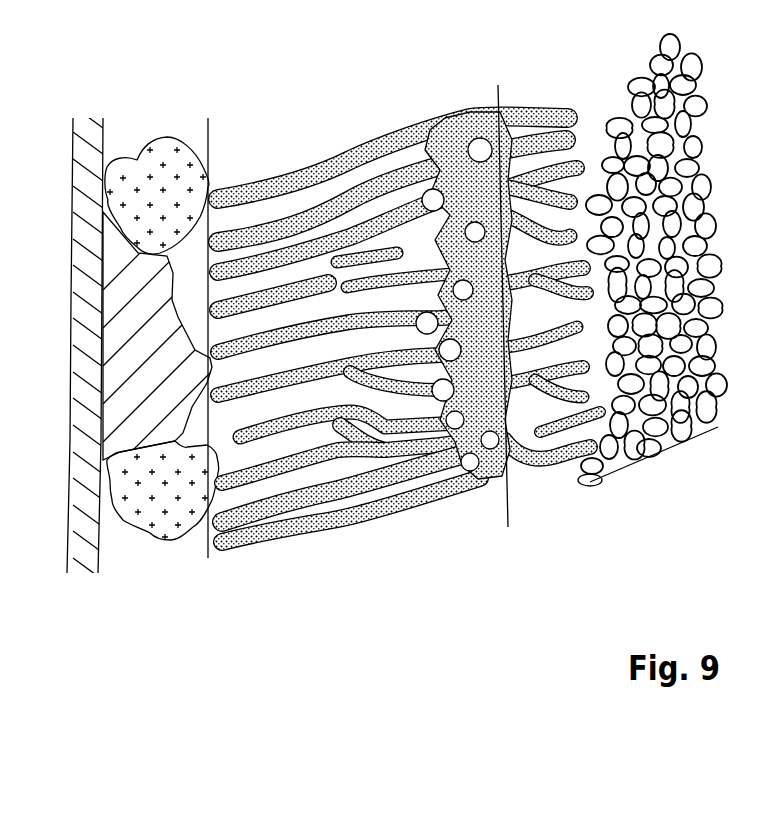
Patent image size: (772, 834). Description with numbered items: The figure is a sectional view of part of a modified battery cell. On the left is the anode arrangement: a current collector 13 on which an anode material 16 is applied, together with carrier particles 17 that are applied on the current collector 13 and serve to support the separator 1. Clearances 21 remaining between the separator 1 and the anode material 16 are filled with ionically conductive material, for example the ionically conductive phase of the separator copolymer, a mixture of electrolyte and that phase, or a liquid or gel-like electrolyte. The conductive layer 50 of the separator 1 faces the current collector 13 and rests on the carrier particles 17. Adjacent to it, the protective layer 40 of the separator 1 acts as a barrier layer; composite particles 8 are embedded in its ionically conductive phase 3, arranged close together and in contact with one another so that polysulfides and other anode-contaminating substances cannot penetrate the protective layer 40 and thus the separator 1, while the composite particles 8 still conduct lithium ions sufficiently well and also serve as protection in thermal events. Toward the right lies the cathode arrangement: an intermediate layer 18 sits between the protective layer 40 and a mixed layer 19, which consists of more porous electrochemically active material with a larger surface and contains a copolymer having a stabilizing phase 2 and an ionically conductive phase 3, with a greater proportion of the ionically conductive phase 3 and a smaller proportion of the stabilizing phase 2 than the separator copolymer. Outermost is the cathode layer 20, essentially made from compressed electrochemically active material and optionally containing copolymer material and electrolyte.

The separator 1 is at (270, 86).
The stabilizing phase 2 is at (382, 138).
The ionically conductive phase 3 is at (307, 195).
The composite particles 8 is at (450, 115).
The current collector 13 is at (83, 155).
The anode material 16 is at (127, 330).
The carrier particles 17 is at (157, 168).
The intermediate layer 18 is at (577, 522).
The mixed layer 19 is at (648, 508).
The cathode layer 20 is at (718, 497).
The clearances 21 is at (226, 338).
The protective layer 40 is at (505, 535).
The conductive layer 50 is at (220, 583).